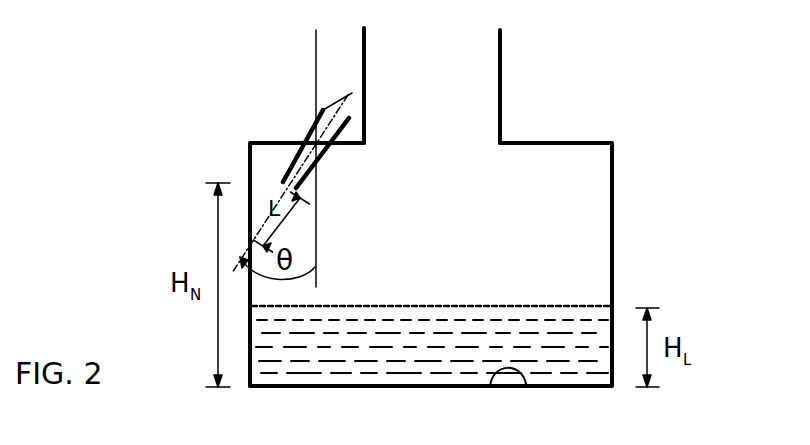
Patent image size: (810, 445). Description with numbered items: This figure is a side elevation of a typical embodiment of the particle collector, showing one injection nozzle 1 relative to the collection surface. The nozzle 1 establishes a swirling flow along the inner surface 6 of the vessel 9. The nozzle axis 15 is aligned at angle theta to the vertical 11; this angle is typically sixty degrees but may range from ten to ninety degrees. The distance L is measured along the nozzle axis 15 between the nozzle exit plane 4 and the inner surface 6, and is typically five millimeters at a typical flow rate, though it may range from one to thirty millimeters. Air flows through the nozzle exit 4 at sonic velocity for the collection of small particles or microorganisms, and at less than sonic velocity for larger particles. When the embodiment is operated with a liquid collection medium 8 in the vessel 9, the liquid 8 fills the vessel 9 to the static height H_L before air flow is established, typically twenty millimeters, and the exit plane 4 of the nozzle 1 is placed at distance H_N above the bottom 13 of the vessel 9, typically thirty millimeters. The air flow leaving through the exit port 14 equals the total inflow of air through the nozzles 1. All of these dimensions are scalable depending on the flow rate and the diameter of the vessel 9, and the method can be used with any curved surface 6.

The nozzle 1 is at (310, 128).
The nozzle exit plane 4 is at (297, 168).
The inner surface 6 is at (252, 190).
The liquid collection medium 8 is at (576, 318).
The vessel 9 is at (613, 205).
The vertical 11 is at (316, 48).
The bottom 13 is at (526, 384).
The exit port 14 is at (500, 82).
The nozzle axis 15 is at (320, 101).